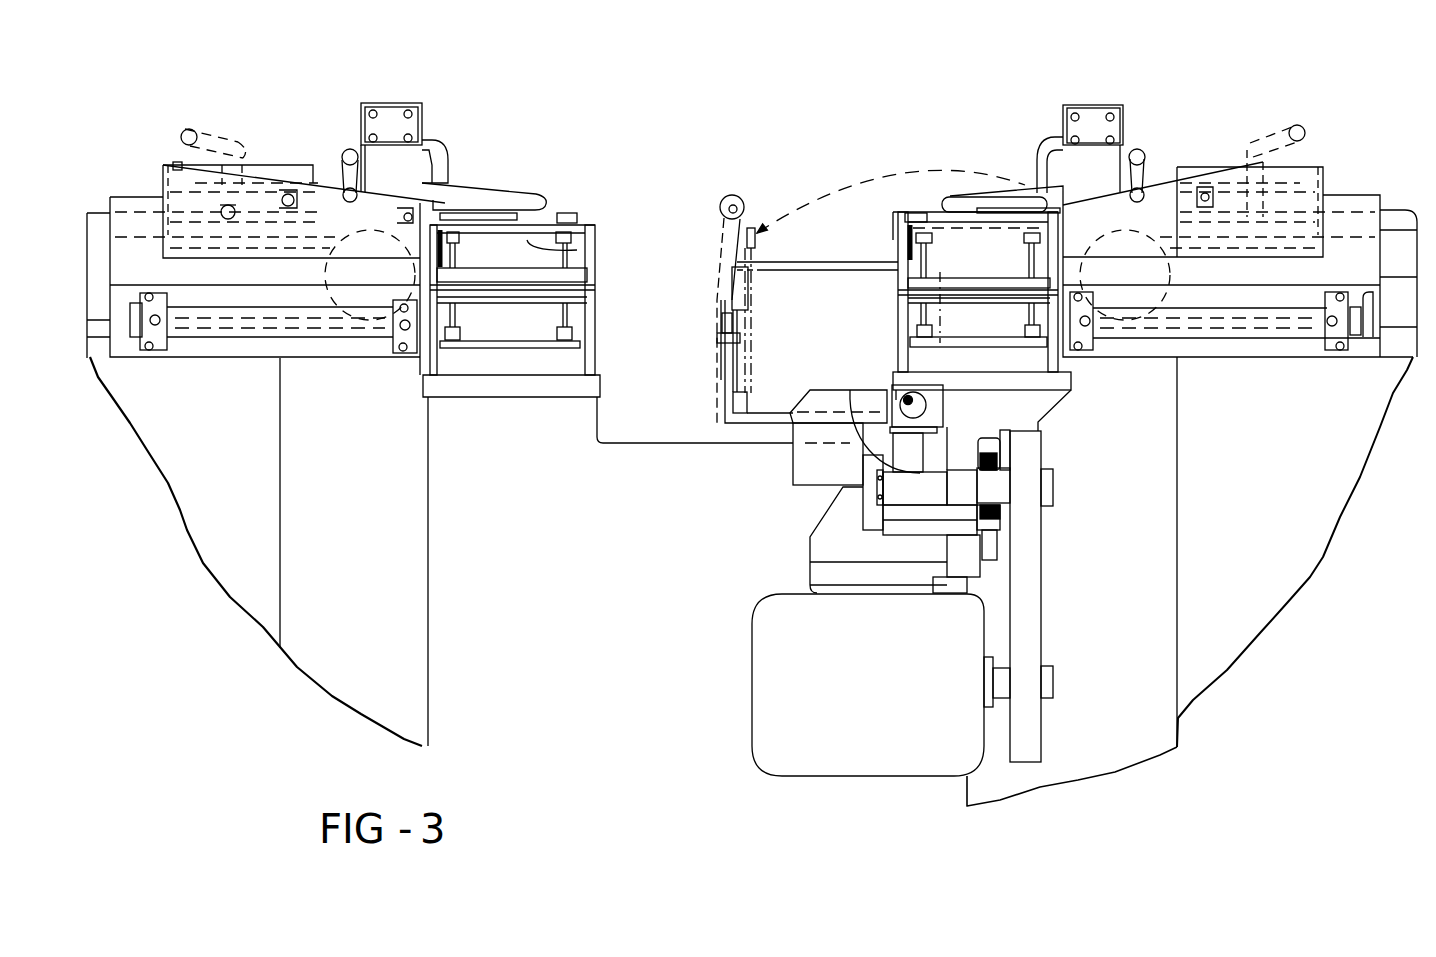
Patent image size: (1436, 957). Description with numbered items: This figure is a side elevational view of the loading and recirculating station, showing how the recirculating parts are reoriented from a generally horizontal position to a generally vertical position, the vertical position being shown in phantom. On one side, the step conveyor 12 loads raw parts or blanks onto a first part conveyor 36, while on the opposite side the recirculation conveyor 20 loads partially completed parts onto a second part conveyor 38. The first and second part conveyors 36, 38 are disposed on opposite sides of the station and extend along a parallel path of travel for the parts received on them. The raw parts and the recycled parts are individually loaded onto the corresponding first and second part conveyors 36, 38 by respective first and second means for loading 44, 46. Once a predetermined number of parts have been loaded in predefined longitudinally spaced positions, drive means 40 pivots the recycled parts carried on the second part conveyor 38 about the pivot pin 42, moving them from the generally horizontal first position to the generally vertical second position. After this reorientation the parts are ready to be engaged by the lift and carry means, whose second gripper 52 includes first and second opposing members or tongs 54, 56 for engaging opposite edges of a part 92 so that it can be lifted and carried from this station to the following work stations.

The step conveyor 12 is at (92, 215).
The recirculation conveyor 20 is at (1398, 197).
The first part conveyor 36 is at (575, 256).
The second part conveyor 38 is at (950, 238).
The drive means 40 is at (777, 781).
The pivot pin 42 is at (895, 385).
The first means for loading 44 is at (280, 168).
The second means for loading 46 is at (1207, 153).
The second gripper 52 is at (737, 193).
The first opposing member 54 is at (712, 318).
The second opposing member 56 is at (757, 253).
The finished part 92 is at (563, 214).